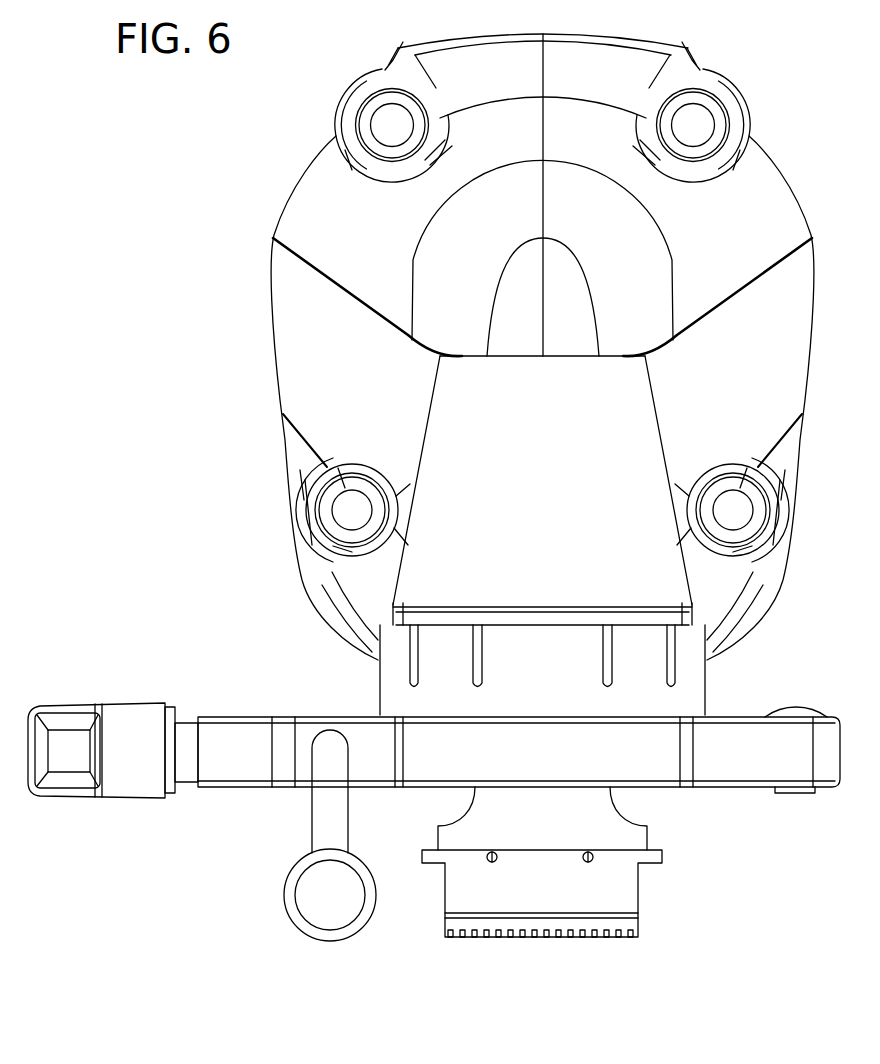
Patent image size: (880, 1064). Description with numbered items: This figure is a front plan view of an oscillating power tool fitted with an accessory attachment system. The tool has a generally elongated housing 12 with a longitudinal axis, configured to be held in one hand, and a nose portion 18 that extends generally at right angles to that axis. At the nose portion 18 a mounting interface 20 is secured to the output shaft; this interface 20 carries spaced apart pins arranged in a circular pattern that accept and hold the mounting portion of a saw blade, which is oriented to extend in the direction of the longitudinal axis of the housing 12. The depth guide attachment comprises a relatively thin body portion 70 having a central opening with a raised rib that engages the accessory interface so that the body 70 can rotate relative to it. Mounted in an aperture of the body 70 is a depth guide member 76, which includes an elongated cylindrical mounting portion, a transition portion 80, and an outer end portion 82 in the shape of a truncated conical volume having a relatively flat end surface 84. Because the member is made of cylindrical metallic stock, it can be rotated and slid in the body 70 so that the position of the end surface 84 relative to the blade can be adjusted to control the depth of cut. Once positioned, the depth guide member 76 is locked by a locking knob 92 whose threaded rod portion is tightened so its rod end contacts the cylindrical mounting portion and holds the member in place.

The housing 12 is at (290, 178).
The nose portion 18 is at (422, 415).
The mounting interface 20 is at (602, 810).
The body portion 70 is at (738, 713).
The depth guide member 76 is at (310, 850).
The transition portion 80 is at (330, 805).
The outer end portion 82 is at (290, 880).
The end surface 84 is at (330, 900).
The locking knob 92 is at (66, 740).